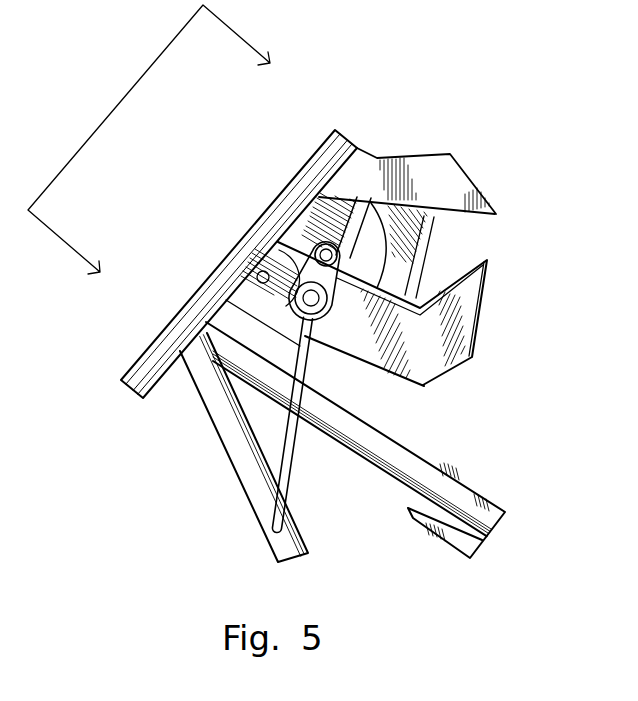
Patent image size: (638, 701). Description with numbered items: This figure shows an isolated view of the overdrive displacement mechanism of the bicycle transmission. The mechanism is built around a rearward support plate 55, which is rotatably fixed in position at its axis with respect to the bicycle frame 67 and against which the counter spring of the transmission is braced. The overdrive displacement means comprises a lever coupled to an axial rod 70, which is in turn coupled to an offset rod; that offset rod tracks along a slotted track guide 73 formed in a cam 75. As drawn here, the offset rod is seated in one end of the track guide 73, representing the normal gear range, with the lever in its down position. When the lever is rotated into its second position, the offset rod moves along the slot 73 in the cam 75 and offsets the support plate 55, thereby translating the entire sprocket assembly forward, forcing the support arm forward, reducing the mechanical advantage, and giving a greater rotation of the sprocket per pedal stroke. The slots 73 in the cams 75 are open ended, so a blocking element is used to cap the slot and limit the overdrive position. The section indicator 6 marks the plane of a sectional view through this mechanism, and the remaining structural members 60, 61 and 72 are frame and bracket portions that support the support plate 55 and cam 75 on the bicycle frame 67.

The section line 6- 6 is at (161, 151).
The rearward support plate 55 is at (457, 337).
The strut 60 is at (243, 440).
The rail 61 is at (392, 462).
The bicycle frame 67 is at (261, 240).
The axial rod 70 is at (337, 313).
The block 72 is at (432, 180).
The slotted track guide 73 is at (358, 210).
The cam 75 is at (373, 247).